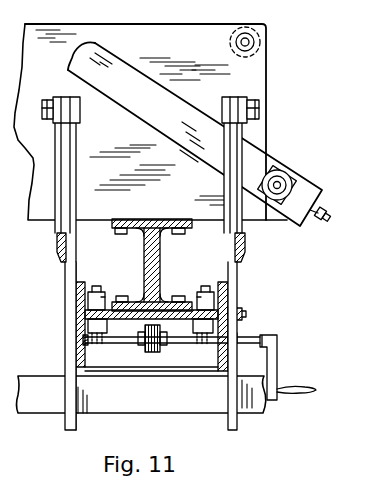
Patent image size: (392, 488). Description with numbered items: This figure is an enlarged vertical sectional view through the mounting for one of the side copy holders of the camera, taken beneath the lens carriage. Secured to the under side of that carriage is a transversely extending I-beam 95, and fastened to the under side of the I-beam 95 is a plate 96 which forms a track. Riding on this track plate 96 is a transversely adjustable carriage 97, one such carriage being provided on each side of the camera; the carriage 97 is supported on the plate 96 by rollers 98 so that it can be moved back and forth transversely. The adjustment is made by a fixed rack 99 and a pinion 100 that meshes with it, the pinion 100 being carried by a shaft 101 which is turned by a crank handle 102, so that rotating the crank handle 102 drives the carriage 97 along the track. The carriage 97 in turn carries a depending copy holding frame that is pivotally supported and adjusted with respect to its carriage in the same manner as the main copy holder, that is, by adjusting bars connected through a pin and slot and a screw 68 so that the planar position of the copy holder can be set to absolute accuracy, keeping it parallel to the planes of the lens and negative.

The screw 68 is at (331, 220).
The I-beam 95 is at (157, 268).
The plate 96 is at (168, 324).
The carriage 97 is at (239, 304).
The roller 98 is at (97, 297).
The fixed rack 99 is at (152, 316).
The pinion 100 is at (160, 347).
The shaft 101 is at (252, 340).
The crank handle 102 is at (278, 364).